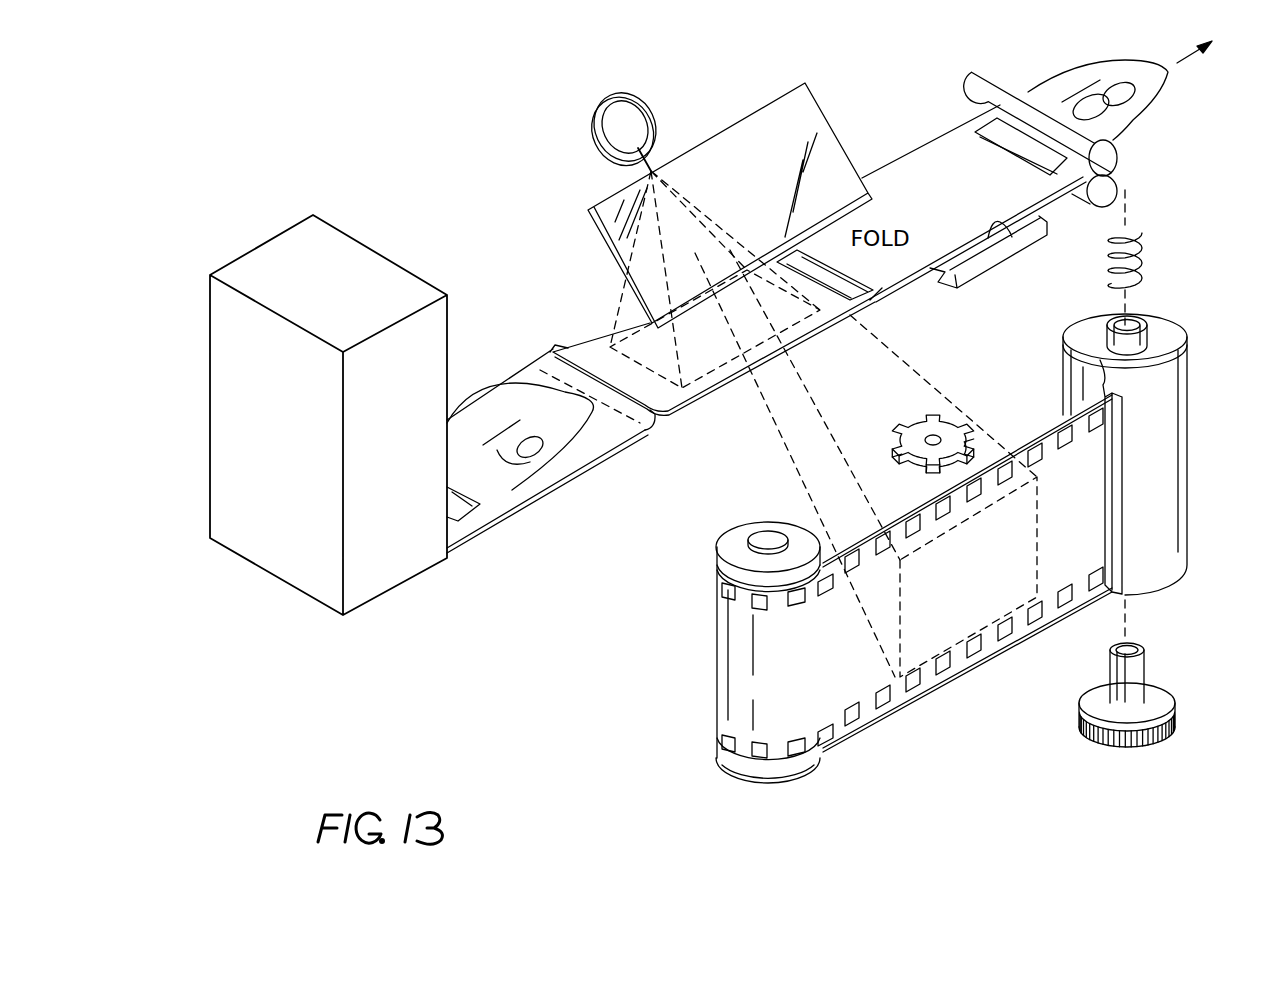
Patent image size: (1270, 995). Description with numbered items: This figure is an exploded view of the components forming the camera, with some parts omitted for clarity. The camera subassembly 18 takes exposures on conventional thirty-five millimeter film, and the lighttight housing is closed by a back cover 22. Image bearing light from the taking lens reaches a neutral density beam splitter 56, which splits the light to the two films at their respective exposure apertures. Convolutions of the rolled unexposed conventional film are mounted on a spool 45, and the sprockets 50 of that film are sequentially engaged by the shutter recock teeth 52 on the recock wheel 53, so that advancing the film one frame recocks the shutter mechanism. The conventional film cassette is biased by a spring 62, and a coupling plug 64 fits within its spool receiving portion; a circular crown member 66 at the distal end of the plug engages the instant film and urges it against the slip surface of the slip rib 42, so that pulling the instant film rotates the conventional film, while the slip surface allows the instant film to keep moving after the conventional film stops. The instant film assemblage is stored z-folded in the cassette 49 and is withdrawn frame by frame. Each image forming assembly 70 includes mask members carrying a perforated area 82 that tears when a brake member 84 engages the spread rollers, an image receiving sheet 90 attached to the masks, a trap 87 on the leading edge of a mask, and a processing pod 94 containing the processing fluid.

The camera subassembly 18 is at (1137, 340).
The back cover 22 is at (493, 392).
The slip rib 42 is at (1012, 236).
The spool 45 is at (717, 550).
The cassette 49 is at (287, 255).
The sprockets 50 is at (882, 563).
The shutter recock teeth 52 is at (933, 420).
The recock wheel 53 is at (922, 450).
The neutral density beam splitter 56 is at (605, 244).
The spring 62 is at (1150, 258).
The coupling plug 64 is at (1160, 697).
The circular crown member 66 is at (1173, 727).
The image forming assembly 70 is at (928, 135).
The perforated area 82 is at (593, 420).
The brake member 84 is at (1007, 152).
The trap 87 is at (640, 416).
The image receiving sheet 90 is at (717, 385).
The processing pod 94 is at (857, 307).